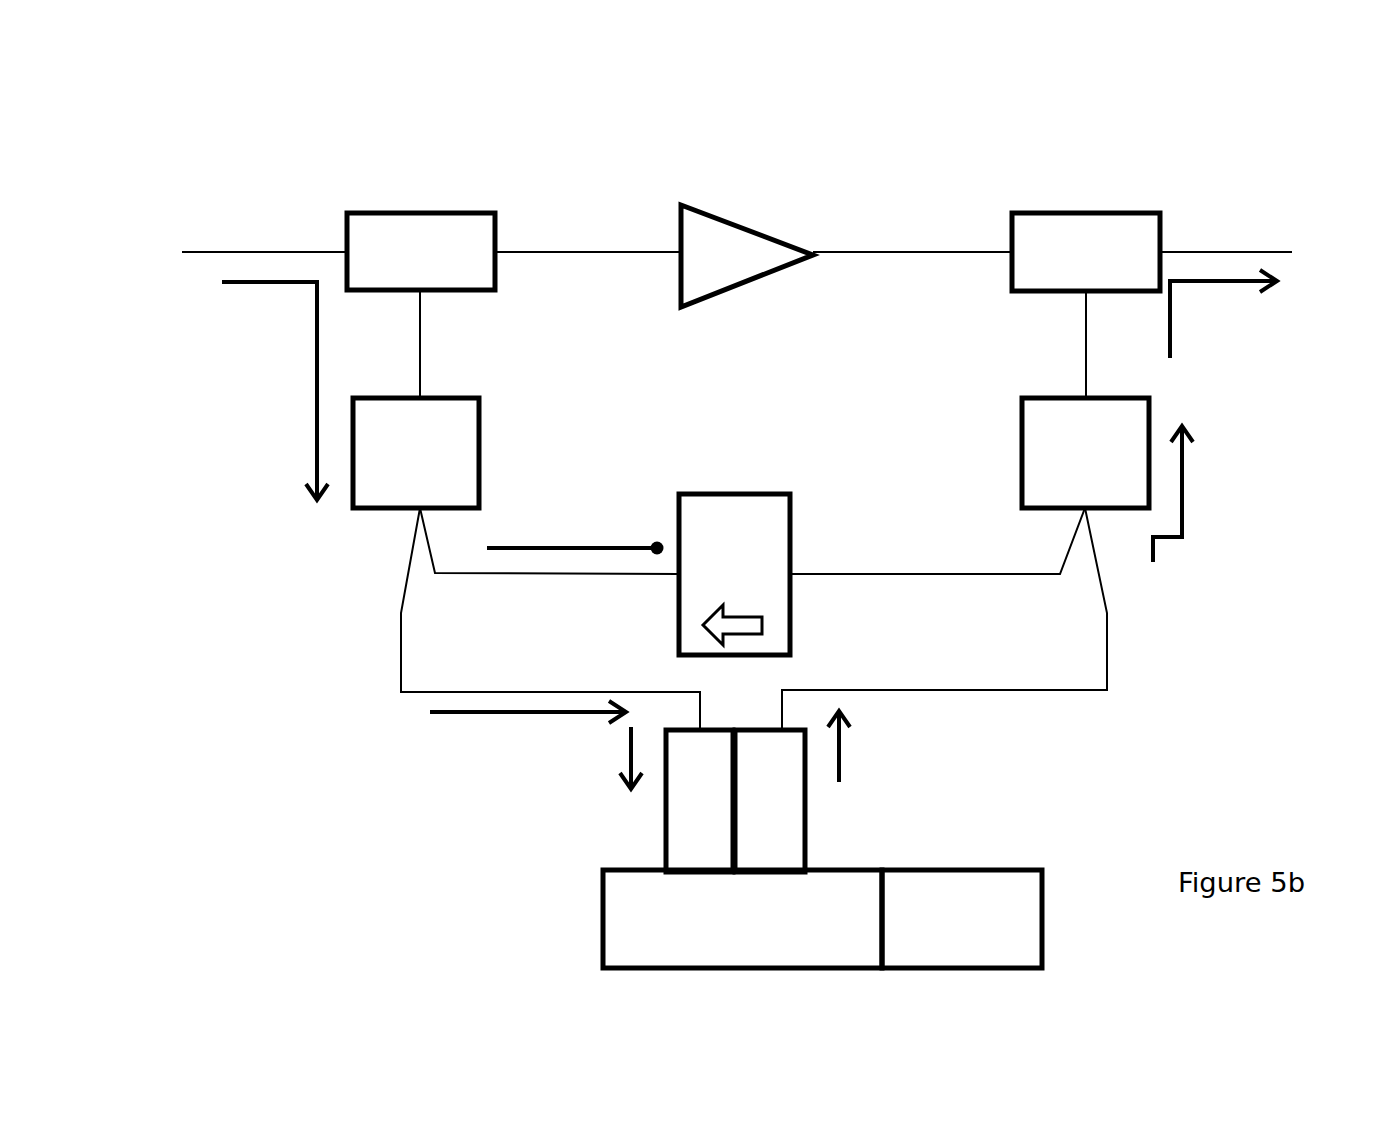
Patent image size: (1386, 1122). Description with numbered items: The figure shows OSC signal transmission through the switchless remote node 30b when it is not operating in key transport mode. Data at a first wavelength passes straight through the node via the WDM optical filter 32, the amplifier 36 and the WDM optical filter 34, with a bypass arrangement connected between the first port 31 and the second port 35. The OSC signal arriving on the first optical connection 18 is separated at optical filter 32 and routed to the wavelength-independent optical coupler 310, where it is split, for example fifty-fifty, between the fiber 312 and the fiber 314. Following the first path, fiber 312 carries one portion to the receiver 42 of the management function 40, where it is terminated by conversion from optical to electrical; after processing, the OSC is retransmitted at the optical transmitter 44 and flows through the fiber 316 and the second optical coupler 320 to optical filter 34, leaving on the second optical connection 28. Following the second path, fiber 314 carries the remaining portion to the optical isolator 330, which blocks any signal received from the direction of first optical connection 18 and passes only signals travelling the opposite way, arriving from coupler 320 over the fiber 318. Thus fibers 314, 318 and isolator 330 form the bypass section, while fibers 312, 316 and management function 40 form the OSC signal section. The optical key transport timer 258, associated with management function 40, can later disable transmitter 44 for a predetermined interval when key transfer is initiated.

The switchless remote node 30b is at (262, 147).
The first optical connection 18 is at (264, 239).
The first port 31 is at (346, 250).
The optical filter 32 is at (473, 267).
The amplifier 36 is at (735, 272).
The optical filter 34 is at (1137, 268).
The second port 35 is at (1170, 250).
The second optical connection 28 is at (1226, 240).
The optical coupler 310 is at (440, 498).
The second optical coupler 320 is at (1113, 500).
The optical isolator 330 is at (758, 595).
The fiber 314 is at (549, 560).
The fiber 318 is at (937, 559).
The fiber 312 is at (550, 619).
The fiber 316 is at (944, 619).
The receiver 42 is at (716, 857).
The optical transmitter 44 is at (785, 857).
The management function 40 is at (812, 950).
The optical key transport timer 258 is at (962, 919).